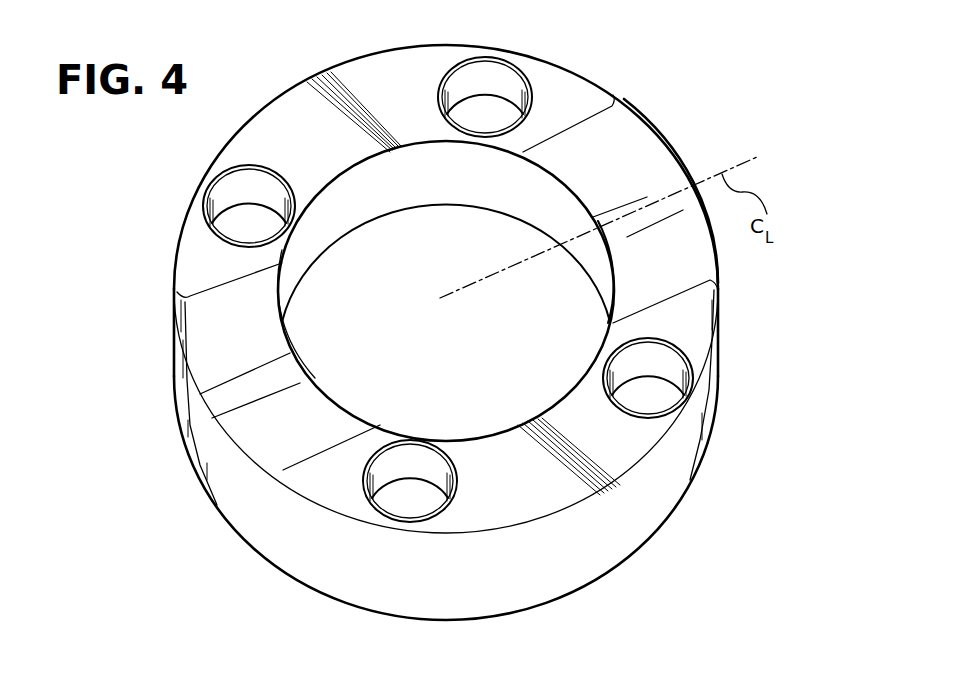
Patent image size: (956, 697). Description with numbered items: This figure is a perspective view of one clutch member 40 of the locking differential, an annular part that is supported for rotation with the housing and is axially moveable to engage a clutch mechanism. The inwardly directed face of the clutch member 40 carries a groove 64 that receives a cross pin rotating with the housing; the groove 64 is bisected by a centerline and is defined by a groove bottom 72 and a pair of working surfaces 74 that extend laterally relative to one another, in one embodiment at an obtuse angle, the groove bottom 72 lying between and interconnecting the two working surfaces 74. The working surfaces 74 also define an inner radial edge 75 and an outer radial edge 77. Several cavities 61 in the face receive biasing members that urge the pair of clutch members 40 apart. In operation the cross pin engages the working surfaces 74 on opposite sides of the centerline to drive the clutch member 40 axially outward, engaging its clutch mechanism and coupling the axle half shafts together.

The clutch member 40 is at (538, 48).
The cavities 61 is at (458, 85).
The groove 64 is at (160, 384).
The groove bottom 72 is at (592, 262).
The working surfaces 74 is at (628, 150).
The inner radial edge 75 is at (557, 190).
The outer radial edge 77 is at (258, 463).